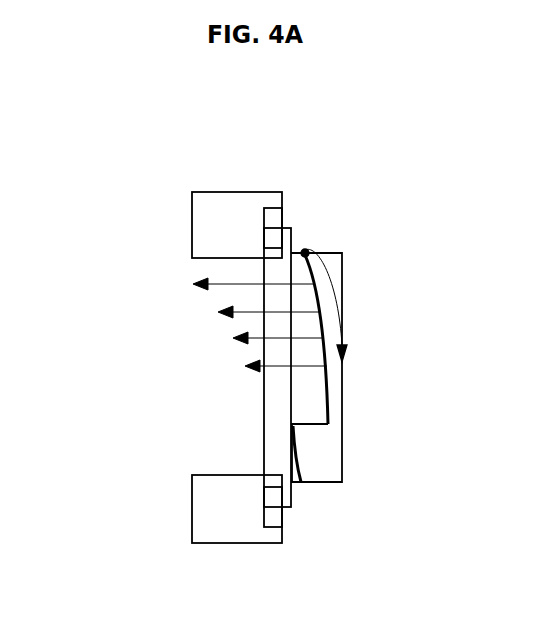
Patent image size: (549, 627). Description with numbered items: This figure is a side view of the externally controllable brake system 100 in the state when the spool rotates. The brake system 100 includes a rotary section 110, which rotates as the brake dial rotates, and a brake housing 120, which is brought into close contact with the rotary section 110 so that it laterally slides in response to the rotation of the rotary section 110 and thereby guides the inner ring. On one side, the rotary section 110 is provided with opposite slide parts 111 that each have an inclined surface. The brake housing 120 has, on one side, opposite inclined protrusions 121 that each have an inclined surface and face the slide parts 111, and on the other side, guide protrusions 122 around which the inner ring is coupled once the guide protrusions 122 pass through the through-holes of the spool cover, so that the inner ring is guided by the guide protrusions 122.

The brake system 100 is at (350, 219).
The rotary section 110 is at (338, 407).
The slide parts 111 is at (322, 460).
The brake housing 120 is at (273, 400).
The inclined protrusions 121 is at (316, 383).
The guide protrusions 122 is at (208, 210).